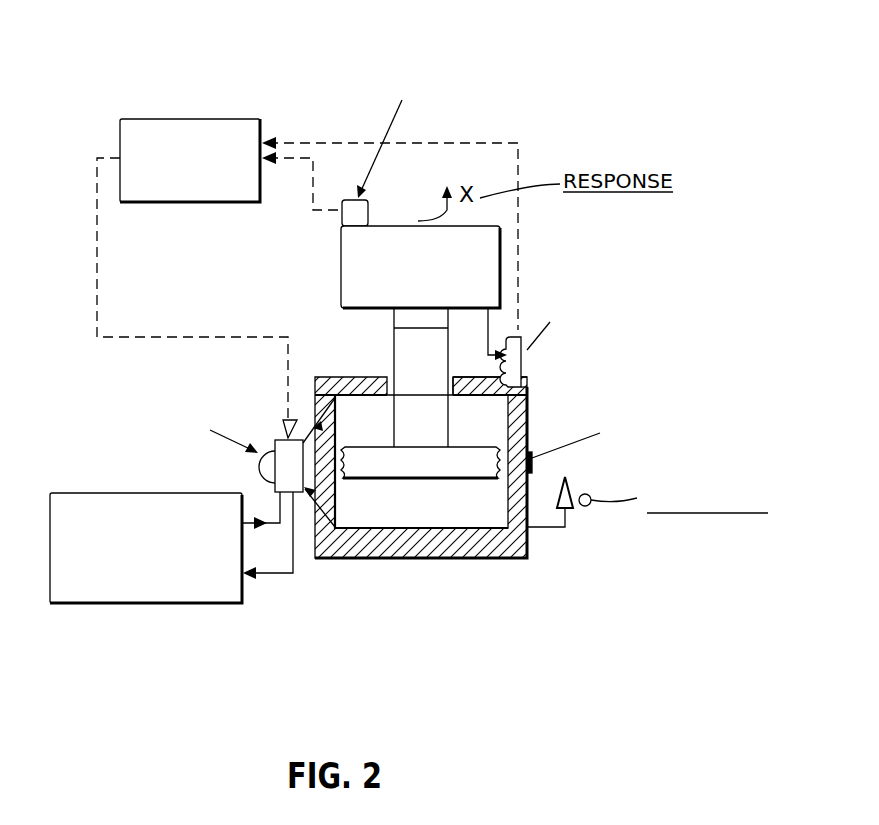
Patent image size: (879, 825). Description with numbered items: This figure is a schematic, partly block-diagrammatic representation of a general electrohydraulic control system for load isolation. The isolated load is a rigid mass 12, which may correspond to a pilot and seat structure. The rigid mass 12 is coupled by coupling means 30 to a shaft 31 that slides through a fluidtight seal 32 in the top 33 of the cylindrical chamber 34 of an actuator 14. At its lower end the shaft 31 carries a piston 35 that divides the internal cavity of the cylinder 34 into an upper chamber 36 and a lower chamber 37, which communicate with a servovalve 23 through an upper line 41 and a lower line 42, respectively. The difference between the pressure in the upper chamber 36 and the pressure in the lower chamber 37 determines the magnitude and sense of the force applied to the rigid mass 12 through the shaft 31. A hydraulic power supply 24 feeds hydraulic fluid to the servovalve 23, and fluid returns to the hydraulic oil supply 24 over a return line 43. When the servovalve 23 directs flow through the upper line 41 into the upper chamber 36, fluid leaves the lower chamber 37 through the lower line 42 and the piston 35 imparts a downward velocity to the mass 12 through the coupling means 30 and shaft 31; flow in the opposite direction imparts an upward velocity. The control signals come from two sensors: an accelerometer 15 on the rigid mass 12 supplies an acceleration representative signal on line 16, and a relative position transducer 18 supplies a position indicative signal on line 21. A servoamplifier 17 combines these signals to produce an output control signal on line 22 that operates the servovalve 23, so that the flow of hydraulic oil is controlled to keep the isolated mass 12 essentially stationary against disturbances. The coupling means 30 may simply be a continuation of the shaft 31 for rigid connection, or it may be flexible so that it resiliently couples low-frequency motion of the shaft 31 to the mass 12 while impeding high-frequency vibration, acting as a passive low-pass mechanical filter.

The rigid mass 12 is at (347, 262).
The actuator 14 is at (550, 474).
The accelerometer 15 is at (466, 150).
The line 16 is at (312, 185).
The servoamplifier 17 is at (192, 193).
The relative position transducer 18 is at (534, 338).
The line 21 is at (478, 143).
The line 22 is at (142, 338).
The servovalve 23 is at (279, 438).
The hydraulic power supply 24 is at (133, 569).
The coupling means 30 is at (398, 320).
The shaft 31 is at (395, 357).
The fluidtight seal 32 is at (451, 373).
The top 33 is at (478, 397).
The cylindrical chamber 34 is at (525, 411).
The piston 35 is at (422, 473).
The upper chamber 36 is at (377, 434).
The lower chamber 37 is at (377, 516).
The upper line 41 is at (313, 427).
The lower line 42 is at (310, 497).
The return line 43 is at (260, 577).